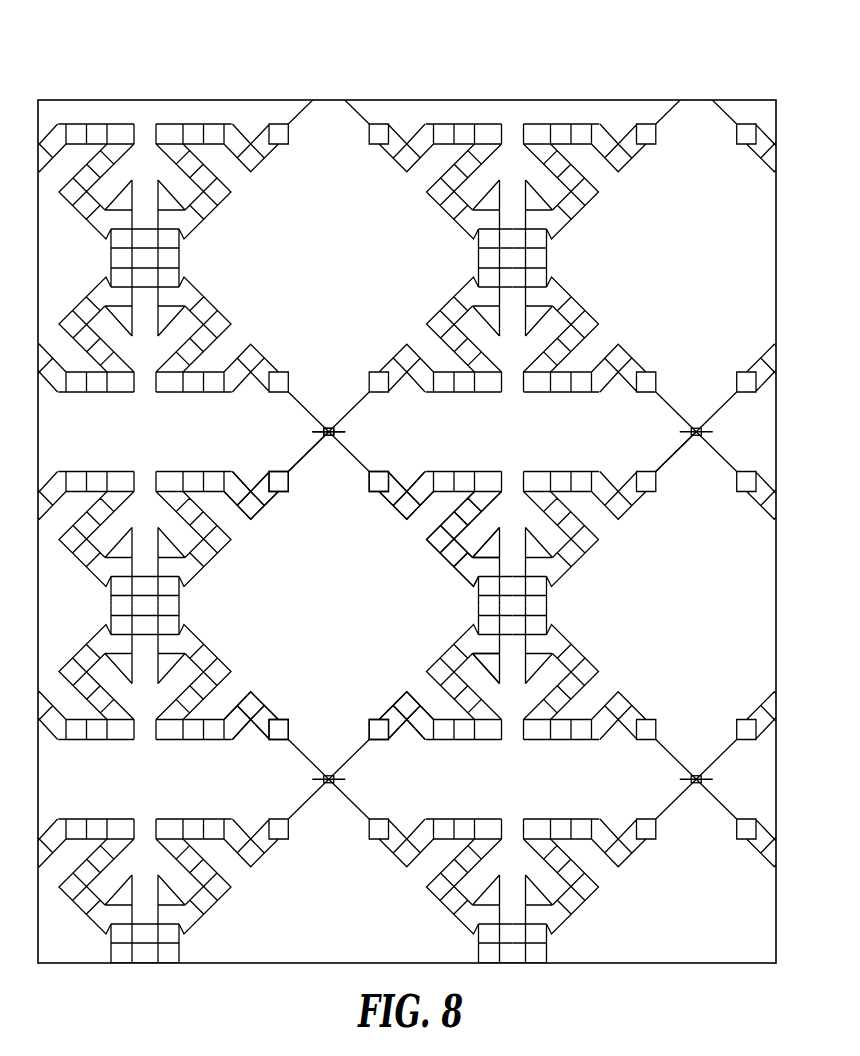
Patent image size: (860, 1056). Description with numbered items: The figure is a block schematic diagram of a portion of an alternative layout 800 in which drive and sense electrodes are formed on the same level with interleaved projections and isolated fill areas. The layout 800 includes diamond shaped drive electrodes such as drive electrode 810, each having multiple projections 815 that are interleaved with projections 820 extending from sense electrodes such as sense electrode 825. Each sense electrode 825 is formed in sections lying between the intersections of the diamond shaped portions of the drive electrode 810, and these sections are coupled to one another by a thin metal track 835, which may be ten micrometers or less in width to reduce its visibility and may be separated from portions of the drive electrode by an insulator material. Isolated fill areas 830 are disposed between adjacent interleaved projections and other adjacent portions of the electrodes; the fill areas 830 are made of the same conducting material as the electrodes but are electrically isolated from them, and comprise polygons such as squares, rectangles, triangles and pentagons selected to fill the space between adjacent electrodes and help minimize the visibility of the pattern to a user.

The layout 800 is at (668, 61).
The drive electrode 810 is at (344, 472).
The projections 815 is at (212, 500).
The projections 820 is at (453, 550).
The sense electrode 825 is at (662, 446).
The isolated fill areas 830 is at (440, 542).
The thin metal track 835 is at (323, 429).